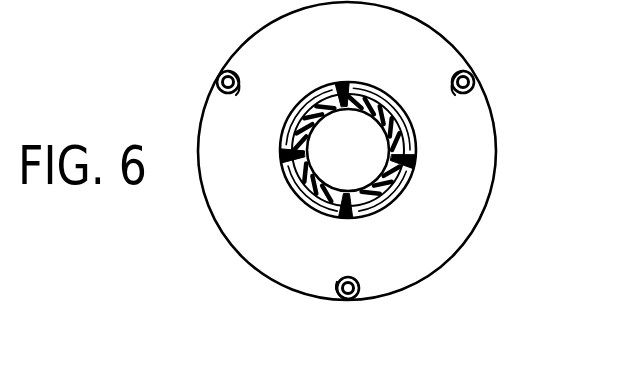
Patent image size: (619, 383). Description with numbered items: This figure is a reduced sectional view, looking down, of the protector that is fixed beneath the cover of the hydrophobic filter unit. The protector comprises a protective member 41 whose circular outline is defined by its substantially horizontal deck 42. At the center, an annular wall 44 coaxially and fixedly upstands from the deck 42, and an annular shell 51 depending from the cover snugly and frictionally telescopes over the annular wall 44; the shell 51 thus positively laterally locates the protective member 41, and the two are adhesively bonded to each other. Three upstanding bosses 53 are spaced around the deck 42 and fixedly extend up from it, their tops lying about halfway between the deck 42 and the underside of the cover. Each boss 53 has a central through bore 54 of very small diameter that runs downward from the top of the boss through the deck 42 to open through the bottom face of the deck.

The protective member 41 is at (497, 134).
The deck 42 is at (336, 113).
The annular wall 44 is at (362, 107).
The annular shell 51 is at (392, 190).
The bosses 53 is at (234, 70).
The central through bore 54 is at (217, 82).